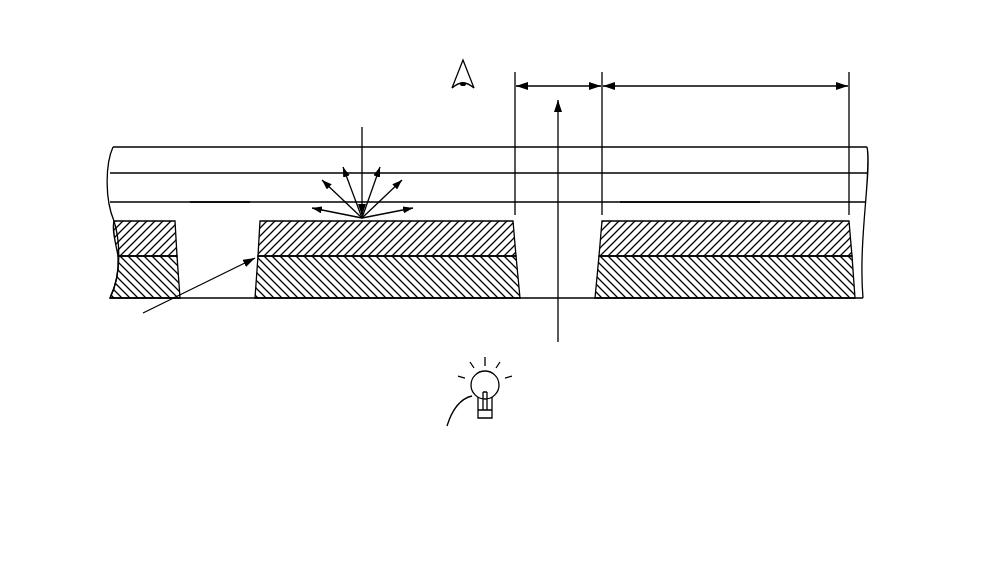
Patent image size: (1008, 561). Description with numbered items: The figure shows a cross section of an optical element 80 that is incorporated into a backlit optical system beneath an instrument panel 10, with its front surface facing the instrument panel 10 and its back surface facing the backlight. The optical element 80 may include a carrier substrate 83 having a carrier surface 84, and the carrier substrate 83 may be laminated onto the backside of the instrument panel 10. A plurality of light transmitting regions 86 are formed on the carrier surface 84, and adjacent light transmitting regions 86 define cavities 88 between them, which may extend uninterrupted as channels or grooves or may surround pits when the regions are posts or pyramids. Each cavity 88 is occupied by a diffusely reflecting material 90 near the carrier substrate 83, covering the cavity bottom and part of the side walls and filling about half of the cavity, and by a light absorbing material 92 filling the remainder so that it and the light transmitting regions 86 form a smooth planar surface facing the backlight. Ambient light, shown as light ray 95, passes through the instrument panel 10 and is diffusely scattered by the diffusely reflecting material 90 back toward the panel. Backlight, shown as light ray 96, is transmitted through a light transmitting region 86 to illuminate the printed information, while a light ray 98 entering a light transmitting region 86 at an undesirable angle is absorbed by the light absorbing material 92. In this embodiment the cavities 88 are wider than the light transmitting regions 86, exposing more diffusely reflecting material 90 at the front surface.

The optical element 80 is at (198, 85).
The instrument panel 10 is at (288, 137).
The carrier substrate 83 is at (128, 187).
The carrier surface 84 is at (150, 213).
The cavities 88 is at (280, 214).
The diffusely reflecting material 90 is at (128, 238).
The light absorbing material 92 is at (118, 278).
The light transmitting regions 86 is at (533, 240).
The light ray 95 is at (362, 130).
The light ray 96 is at (556, 323).
The light ray 98 is at (164, 306).